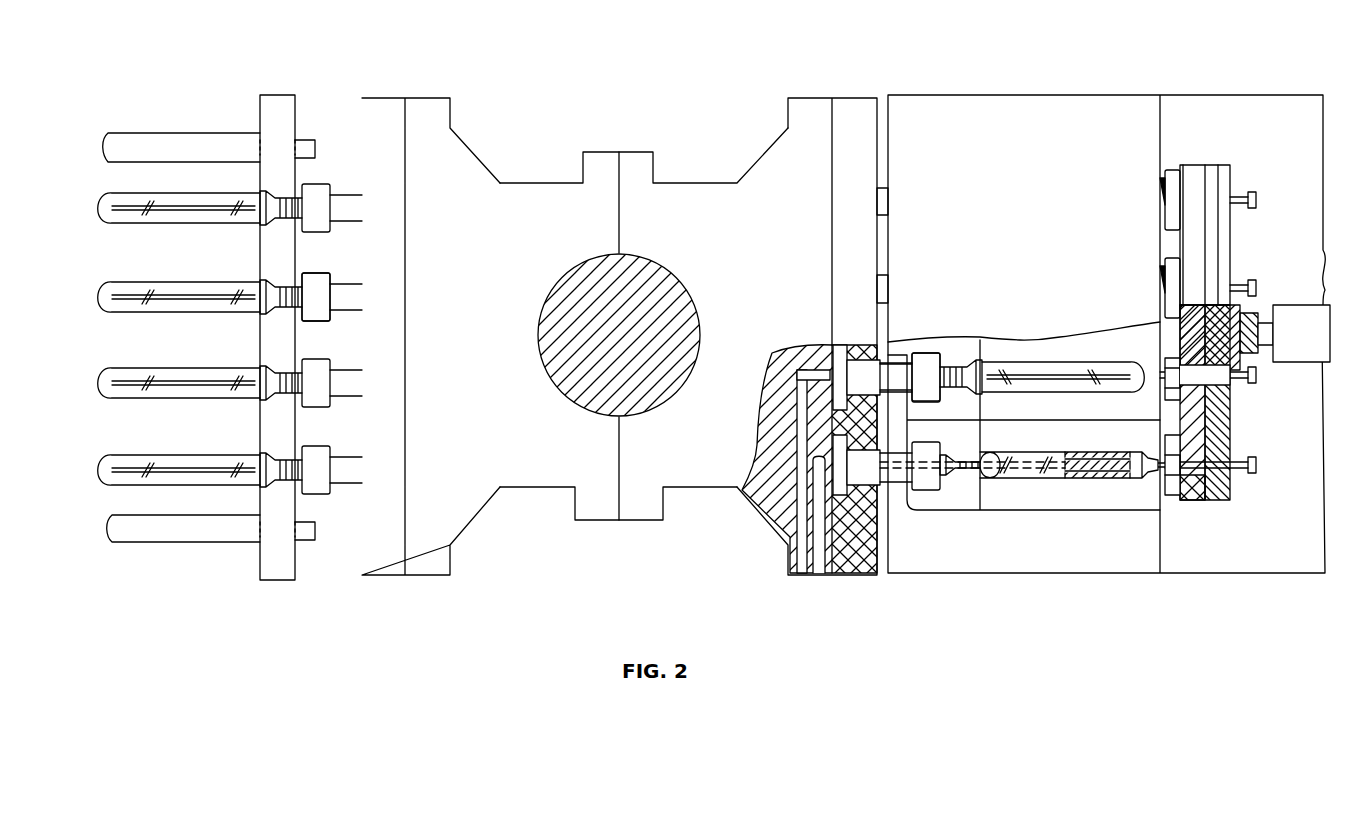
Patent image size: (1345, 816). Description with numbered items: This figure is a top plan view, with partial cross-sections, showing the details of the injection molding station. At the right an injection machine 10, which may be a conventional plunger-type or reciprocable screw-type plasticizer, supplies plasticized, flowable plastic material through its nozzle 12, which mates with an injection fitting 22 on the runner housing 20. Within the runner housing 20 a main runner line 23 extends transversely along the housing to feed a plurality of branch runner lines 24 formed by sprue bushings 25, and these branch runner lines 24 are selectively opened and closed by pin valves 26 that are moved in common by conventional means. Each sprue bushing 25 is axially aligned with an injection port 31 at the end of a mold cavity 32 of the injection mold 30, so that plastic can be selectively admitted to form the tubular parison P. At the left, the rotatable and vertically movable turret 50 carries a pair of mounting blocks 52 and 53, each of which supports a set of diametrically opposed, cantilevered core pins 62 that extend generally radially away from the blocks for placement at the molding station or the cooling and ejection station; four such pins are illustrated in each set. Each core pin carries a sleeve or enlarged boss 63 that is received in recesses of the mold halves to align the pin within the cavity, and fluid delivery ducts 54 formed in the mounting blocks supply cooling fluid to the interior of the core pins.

The injection machine 10 is at (1310, 298).
The nozzle 12 is at (1268, 348).
The runner housing 20 is at (1245, 338).
The injection fitting 22 is at (1250, 315).
The main runner line 23 is at (1200, 410).
The branch runner lines 24 is at (1195, 490).
The sprue bushings 25 is at (1172, 500).
The pin valves 26 is at (1258, 462).
The injection mold 30 is at (1086, 580).
The injection port 31 is at (1140, 482).
The mold cavities 32 is at (1092, 478).
The rotatable turret 50 is at (619, 303).
The mounting block 52 is at (807, 108).
The mounting block 53 is at (428, 105).
The fluid delivery ducts 54 is at (822, 555).
The core pins 62 is at (358, 295).
The enlarged boss 63 is at (320, 300).
The parison P is at (1057, 450).